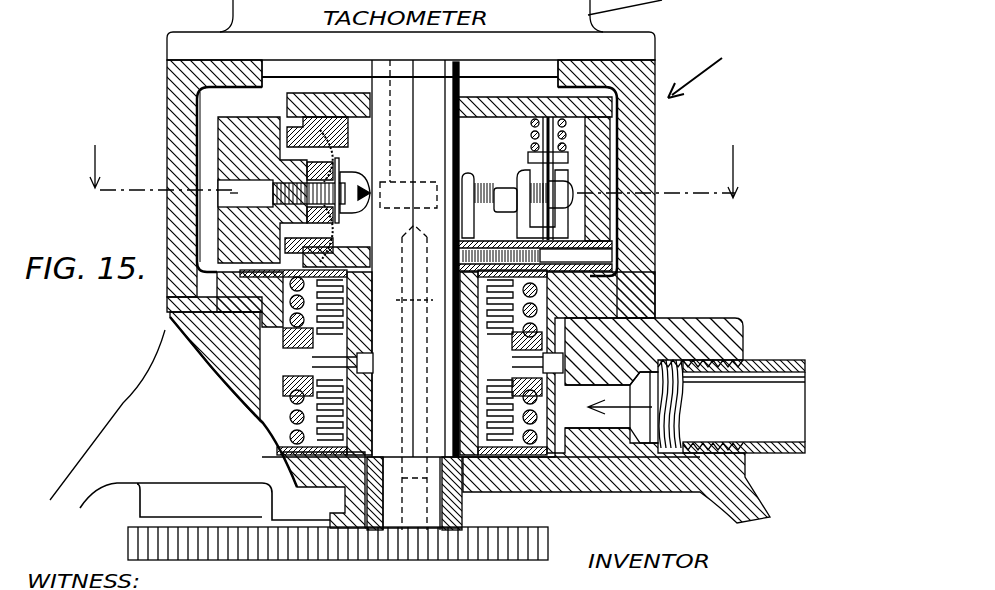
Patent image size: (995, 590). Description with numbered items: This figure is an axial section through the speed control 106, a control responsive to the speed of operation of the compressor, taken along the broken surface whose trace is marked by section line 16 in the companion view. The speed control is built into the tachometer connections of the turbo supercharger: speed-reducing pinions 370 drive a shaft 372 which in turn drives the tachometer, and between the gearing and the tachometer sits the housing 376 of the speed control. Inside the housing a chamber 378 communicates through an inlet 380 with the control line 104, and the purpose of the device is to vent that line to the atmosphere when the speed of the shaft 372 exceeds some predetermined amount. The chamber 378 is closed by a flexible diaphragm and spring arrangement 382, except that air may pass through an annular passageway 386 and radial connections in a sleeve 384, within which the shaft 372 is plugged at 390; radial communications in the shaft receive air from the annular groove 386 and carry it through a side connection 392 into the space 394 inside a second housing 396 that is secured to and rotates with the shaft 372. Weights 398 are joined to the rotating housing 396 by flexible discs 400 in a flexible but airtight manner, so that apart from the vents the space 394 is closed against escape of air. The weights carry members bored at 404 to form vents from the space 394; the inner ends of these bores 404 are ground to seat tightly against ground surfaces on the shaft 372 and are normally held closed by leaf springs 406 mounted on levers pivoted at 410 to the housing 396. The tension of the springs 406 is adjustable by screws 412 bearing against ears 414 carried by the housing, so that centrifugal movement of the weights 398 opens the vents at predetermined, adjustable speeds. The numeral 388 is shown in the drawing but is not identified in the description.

The section line 16- 16 is at (413, 174).
The line 104 is at (765, 452).
The speed control 106 is at (711, 64).
The pinions 370 is at (326, 562).
The shaft 372 is at (420, 108).
The housing 376 is at (645, 274).
The chamber 378 is at (547, 371).
The inlet 380 is at (660, 372).
The flexible diaphragm and spring arrangement 382 is at (578, 484).
The sleeve 384 is at (357, 411).
The annular passageway 386 is at (358, 360).
The port 388 is at (402, 302).
The plug 390 is at (402, 495).
The side connection 392 is at (435, 233).
The space 394 is at (577, 148).
The housing 396 is at (596, 172).
The weights 398 is at (230, 147).
The flexible discs 400 is at (338, 160).
The bores 404 is at (335, 199).
The leaf springs 406 is at (461, 165).
The pivot 410 is at (552, 218).
The screws 412 is at (493, 185).
The ears 414 is at (468, 175).